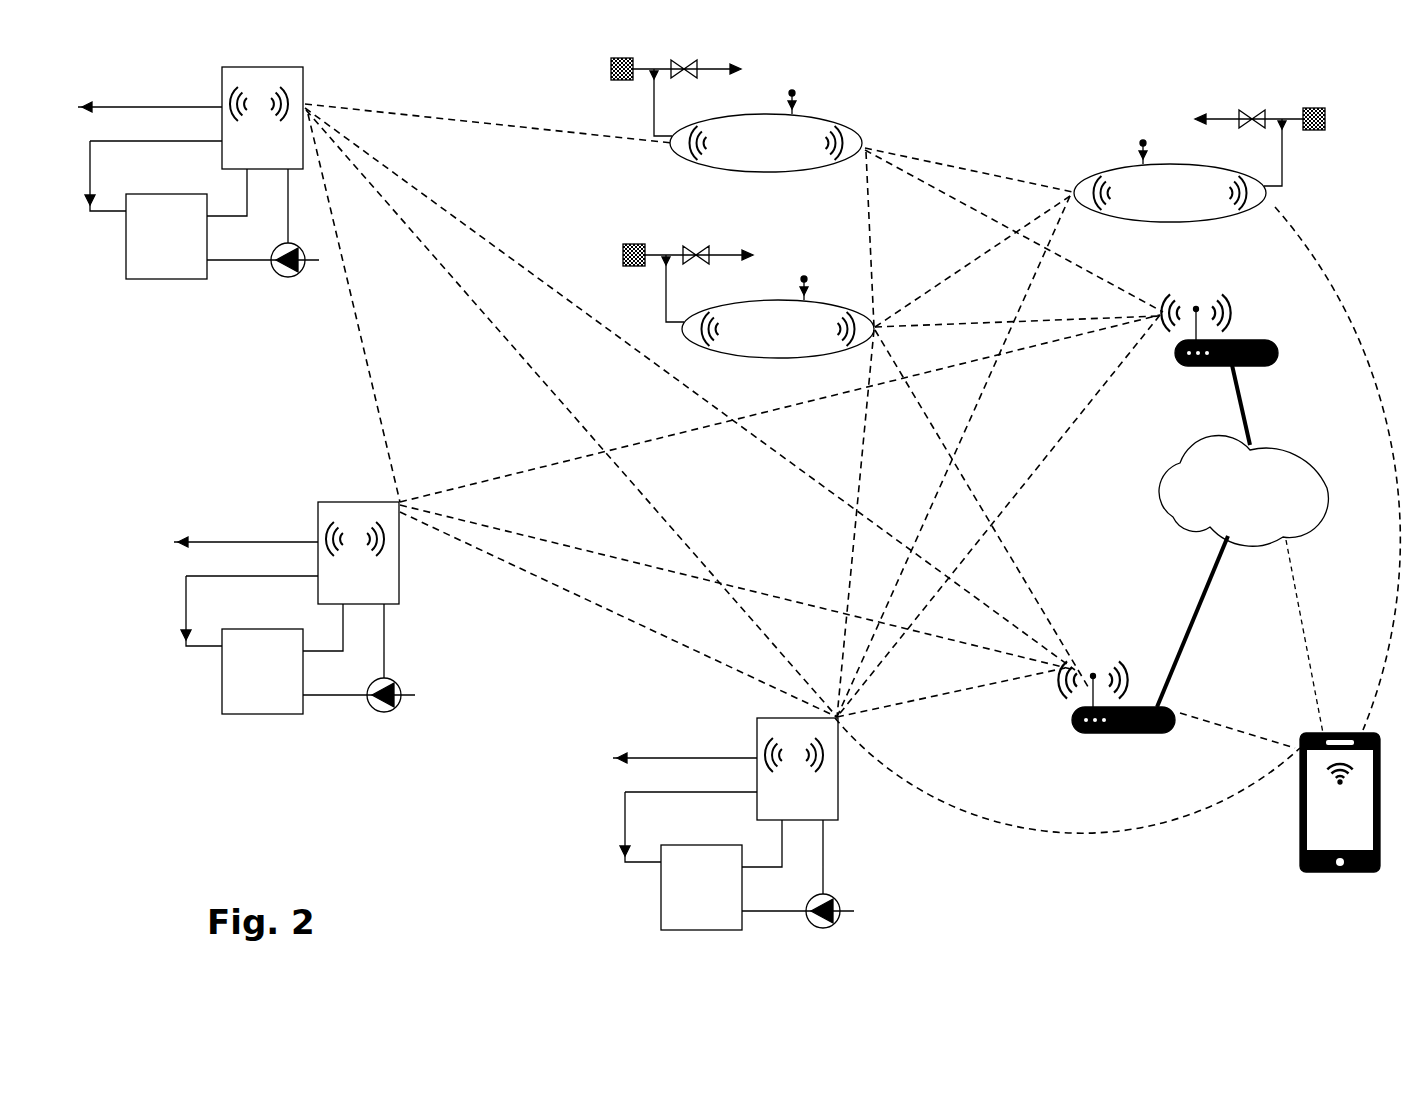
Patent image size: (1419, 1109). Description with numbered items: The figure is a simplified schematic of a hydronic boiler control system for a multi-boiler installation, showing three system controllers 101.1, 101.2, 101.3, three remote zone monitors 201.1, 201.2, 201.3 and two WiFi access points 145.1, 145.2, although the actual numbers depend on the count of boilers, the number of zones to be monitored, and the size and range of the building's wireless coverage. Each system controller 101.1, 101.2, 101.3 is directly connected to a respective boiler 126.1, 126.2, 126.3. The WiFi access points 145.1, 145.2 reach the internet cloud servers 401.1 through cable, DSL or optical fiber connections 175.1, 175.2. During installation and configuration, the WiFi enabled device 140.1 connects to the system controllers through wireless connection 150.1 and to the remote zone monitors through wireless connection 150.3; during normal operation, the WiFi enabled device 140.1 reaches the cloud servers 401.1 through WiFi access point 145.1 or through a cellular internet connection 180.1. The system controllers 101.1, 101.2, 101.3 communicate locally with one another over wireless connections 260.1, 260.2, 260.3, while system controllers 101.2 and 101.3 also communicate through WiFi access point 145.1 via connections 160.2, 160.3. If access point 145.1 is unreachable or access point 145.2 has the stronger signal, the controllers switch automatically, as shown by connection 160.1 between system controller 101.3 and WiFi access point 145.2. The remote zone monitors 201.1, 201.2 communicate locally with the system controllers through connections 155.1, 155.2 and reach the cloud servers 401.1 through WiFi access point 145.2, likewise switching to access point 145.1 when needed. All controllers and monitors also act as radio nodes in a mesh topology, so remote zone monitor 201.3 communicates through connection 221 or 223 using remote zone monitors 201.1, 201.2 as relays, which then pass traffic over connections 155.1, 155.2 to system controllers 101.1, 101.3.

The system controller 101.1 is at (198, 172).
The system controller 101.2 is at (294, 607).
The system controller 101.3 is at (733, 823).
The boiler 126.1 is at (166, 236).
The boiler 126.2 is at (262, 671).
The boiler 126.3 is at (701, 887).
The remote zone monitor 201.1 is at (736, 115).
The remote zone monitor 201.2 is at (748, 301).
The remote zone monitor 201.3 is at (1199, 165).
The WiFi access point 145.1 is at (1163, 731).
The WiFi access point 145.2 is at (1262, 336).
The WiFi enabled device 140.1 is at (1303, 870).
The cloud servers 401.1 is at (1243, 490).
The wireless connection 155.1 is at (472, 90).
The wireless connection 155.2 is at (848, 580).
The wireless connection 221 is at (984, 172).
The wireless connection 223 is at (977, 253).
The local wireless connection 260.1 is at (370, 373).
The local wireless connection 260.2 is at (603, 364).
The local wireless connection 260.3 is at (568, 586).
The wireless connection 160.1 is at (1078, 457).
The wireless connection 160.2 is at (598, 545).
The wireless connection 160.3 is at (962, 690).
The wireless connection 150.1 is at (1104, 835).
The wireless connection 150.3 is at (1390, 430).
The cable, DSL or optical fiber connection 175.1 is at (1195, 628).
The cable, DSL or optical fiber connection 175.2 is at (1241, 421).
The cellular internet connection 180.1 is at (1345, 603).